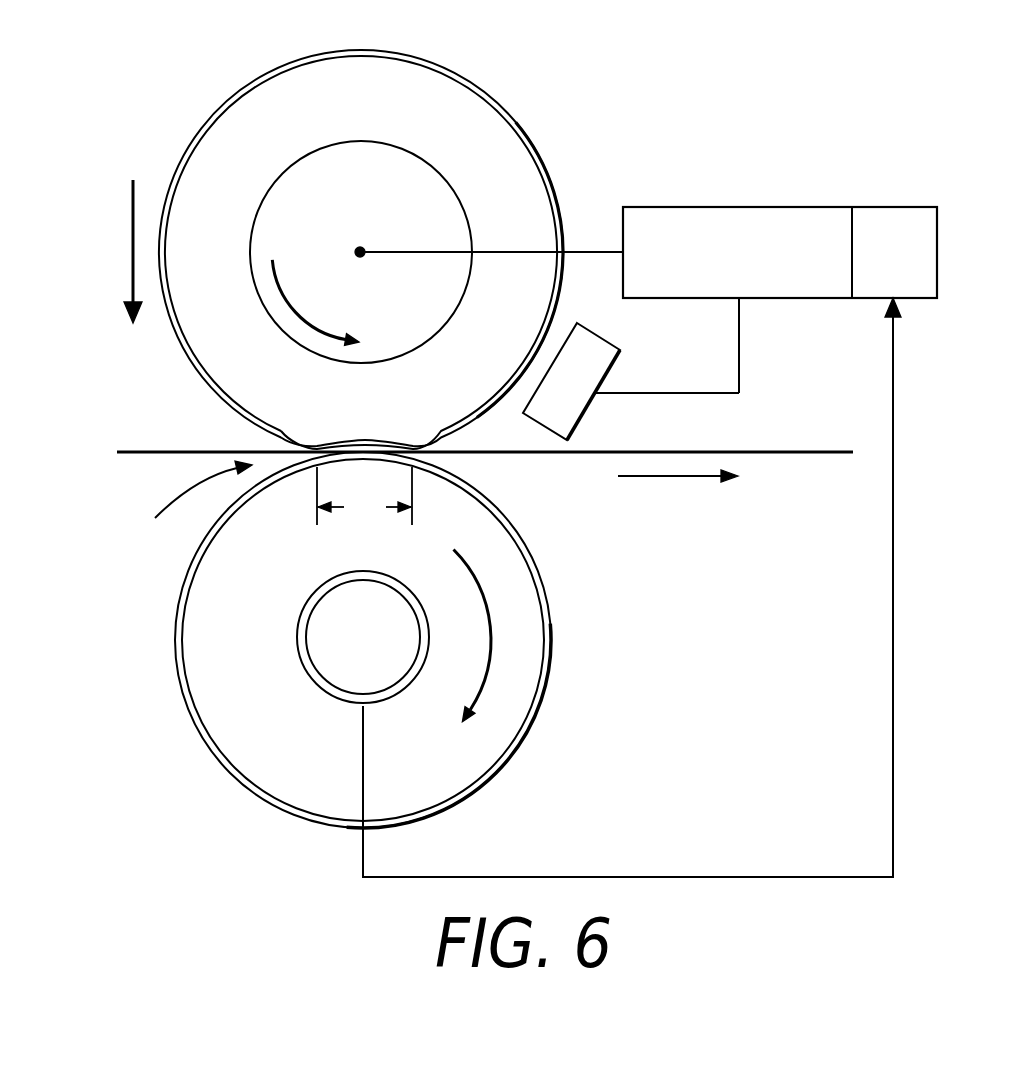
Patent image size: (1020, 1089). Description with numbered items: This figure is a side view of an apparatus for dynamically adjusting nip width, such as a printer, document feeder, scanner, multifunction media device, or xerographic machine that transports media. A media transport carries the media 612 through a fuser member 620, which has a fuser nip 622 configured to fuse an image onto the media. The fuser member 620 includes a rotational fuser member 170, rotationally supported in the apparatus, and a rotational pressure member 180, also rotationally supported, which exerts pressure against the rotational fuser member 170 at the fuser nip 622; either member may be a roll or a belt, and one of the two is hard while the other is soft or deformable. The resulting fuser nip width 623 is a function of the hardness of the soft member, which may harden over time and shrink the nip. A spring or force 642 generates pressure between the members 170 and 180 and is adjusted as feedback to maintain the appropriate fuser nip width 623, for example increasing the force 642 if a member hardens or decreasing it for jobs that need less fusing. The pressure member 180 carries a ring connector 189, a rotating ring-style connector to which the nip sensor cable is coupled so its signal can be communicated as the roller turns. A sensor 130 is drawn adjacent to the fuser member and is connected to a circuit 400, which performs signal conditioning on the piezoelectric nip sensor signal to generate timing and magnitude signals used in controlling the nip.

The rotational fuser member 170 is at (470, 78).
The fuser member 620 is at (588, 158).
The force 642 is at (130, 237).
The circuit 400 is at (913, 267).
The sensor 130 is at (612, 370).
The media 612 is at (747, 452).
The fuser nip 622 is at (186, 508).
The fuser nip width 623 is at (412, 487).
The rotational pressure member 180 is at (555, 629).
The ring connector 189 is at (297, 641).